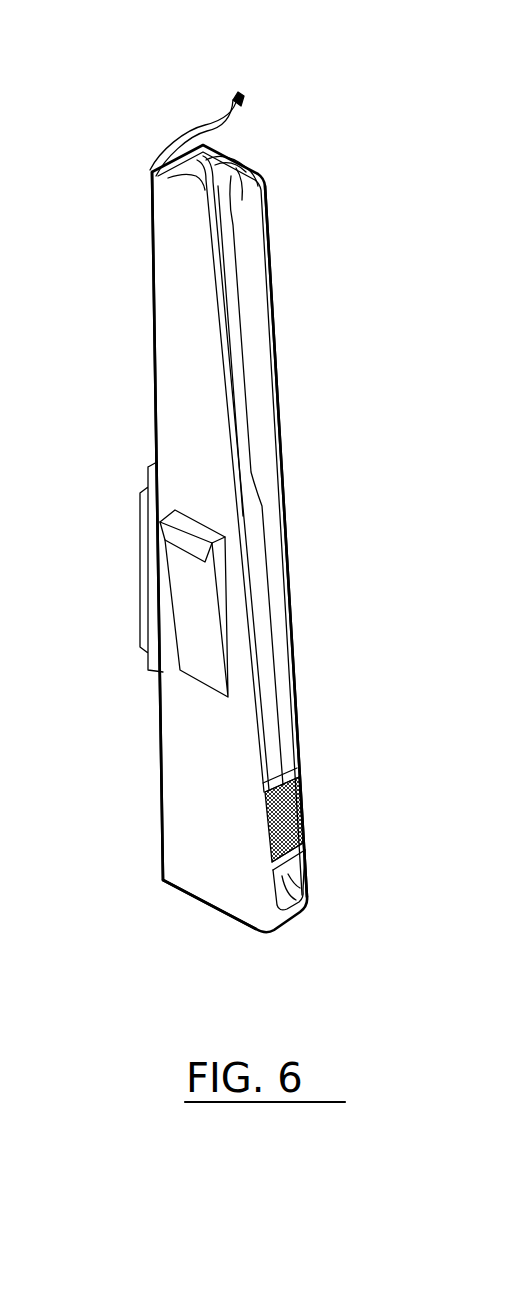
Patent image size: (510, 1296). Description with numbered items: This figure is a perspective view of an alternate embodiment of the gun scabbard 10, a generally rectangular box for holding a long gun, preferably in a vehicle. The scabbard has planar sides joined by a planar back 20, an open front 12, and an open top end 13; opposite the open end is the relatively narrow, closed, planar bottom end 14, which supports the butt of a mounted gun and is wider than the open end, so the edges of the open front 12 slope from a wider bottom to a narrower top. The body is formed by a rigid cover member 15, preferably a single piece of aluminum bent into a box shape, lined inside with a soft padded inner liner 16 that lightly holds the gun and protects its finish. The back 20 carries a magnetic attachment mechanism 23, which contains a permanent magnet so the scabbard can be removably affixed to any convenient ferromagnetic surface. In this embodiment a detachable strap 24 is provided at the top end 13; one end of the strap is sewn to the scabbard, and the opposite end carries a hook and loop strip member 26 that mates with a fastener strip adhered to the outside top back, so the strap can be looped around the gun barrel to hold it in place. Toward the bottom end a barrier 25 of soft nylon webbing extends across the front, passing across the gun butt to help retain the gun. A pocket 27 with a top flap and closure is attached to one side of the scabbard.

The scabbard 10 is at (153, 193).
The open front 12 is at (243, 235).
The open top end 13 is at (233, 156).
The bottom end 14 is at (277, 930).
The cover member 15 is at (178, 290).
The inner liner 16 is at (263, 337).
The back 20 is at (155, 410).
The magnetic attachment mechanism 23 is at (140, 565).
The strap 24 is at (205, 127).
The barrier 25 is at (300, 800).
The hook and loop strip member 26 is at (240, 100).
The pocket 27 is at (197, 630).